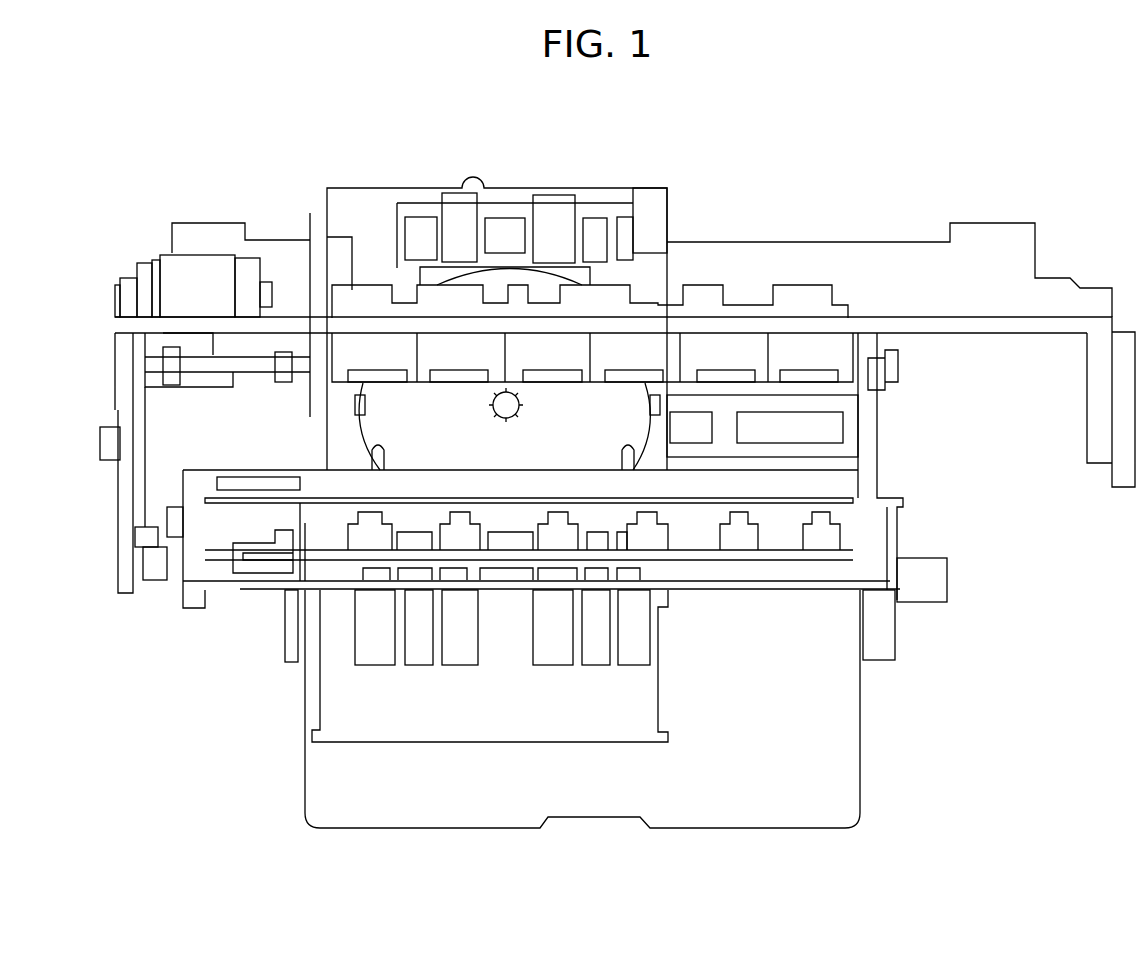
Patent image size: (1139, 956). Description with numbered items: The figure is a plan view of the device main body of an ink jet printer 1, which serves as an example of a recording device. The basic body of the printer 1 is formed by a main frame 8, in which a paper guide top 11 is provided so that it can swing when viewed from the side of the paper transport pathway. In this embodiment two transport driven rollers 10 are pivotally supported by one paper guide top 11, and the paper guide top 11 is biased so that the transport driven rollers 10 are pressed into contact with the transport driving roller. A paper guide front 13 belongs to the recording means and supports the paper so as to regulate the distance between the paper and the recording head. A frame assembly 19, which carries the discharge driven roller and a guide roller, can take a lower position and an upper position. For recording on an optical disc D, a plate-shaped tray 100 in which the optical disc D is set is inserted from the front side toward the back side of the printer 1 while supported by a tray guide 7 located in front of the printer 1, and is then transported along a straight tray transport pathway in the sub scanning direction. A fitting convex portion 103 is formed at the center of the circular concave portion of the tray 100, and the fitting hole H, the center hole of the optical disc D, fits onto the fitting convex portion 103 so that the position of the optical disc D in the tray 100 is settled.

The printer 1 is at (645, 166).
The tray guide 7 is at (858, 733).
The main frame 8 is at (980, 322).
The transport driven roller 10 is at (457, 372).
The paper guide top 11 is at (476, 352).
The paper guide front 13 is at (867, 452).
The frame assembly 19 is at (870, 565).
The tray 100 is at (353, 723).
The fitting convex portion 103 is at (521, 410).
The optical disc D is at (380, 427).
The fitting hole H is at (492, 405).